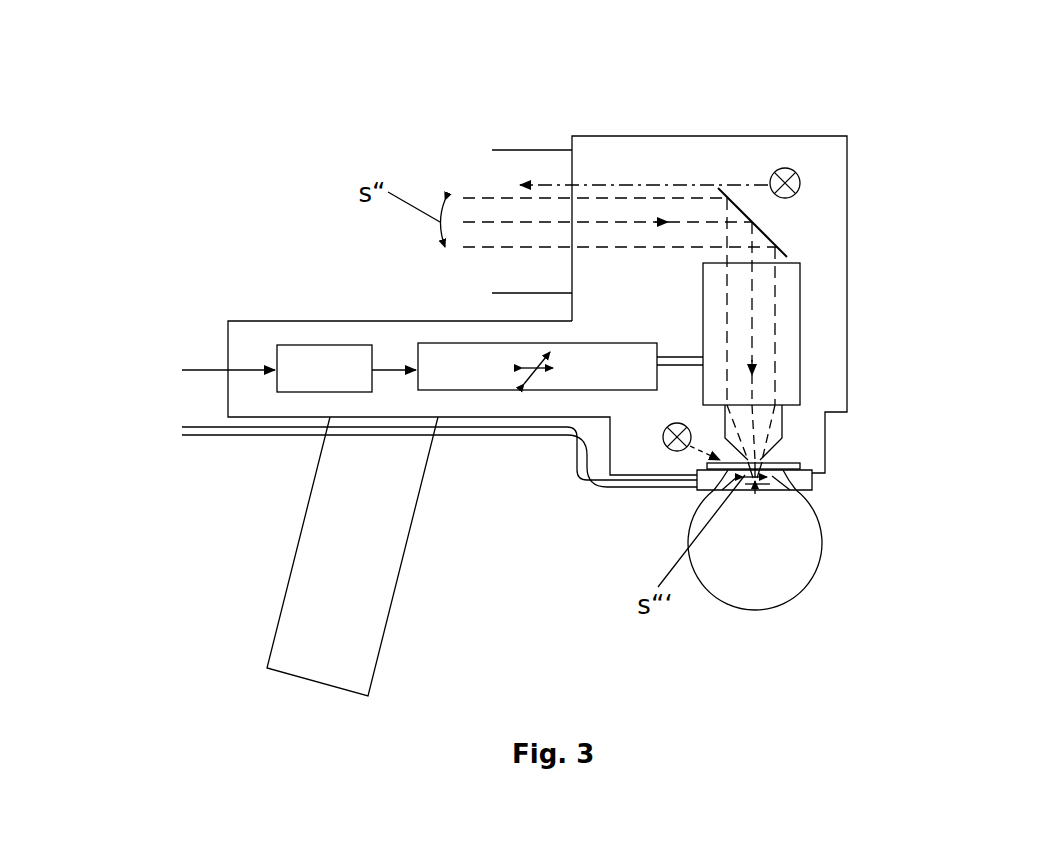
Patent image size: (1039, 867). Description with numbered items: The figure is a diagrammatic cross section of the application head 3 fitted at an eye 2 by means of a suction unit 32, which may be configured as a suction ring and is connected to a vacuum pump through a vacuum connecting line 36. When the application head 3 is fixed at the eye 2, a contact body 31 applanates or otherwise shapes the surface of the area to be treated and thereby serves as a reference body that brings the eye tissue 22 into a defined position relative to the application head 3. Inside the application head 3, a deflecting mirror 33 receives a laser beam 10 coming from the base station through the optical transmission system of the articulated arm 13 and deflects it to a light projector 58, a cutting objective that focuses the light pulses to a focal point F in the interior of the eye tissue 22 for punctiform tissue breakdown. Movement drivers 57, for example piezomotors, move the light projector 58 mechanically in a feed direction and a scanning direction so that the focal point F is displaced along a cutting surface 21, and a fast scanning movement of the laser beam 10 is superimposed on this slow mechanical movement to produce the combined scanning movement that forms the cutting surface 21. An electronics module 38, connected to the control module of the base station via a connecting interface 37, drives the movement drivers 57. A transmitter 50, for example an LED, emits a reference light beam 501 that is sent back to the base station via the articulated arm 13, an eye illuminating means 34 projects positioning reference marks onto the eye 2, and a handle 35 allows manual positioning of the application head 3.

The application head 3 is at (758, 145).
The articulated arm 13 is at (532, 162).
The reference light beam 501 is at (592, 185).
The transmitter 50 is at (800, 185).
The deflecting mirror 33 is at (765, 232).
The laser beam 10 is at (753, 298).
The light projector 58 is at (795, 357).
The electronics module 38 is at (320, 358).
The movement drivers 57 is at (438, 358).
The connecting interface 37 is at (200, 368).
The vacuum connecting line 36 is at (203, 433).
The eye illuminating means 34 is at (664, 442).
The contact body 31 is at (798, 465).
The suction unit 32 is at (813, 488).
The eye tissue 22 is at (728, 478).
The cutting surface 21 is at (767, 483).
The eye 2 is at (713, 605).
The focal point F is at (755, 488).
The handle 35 is at (368, 608).